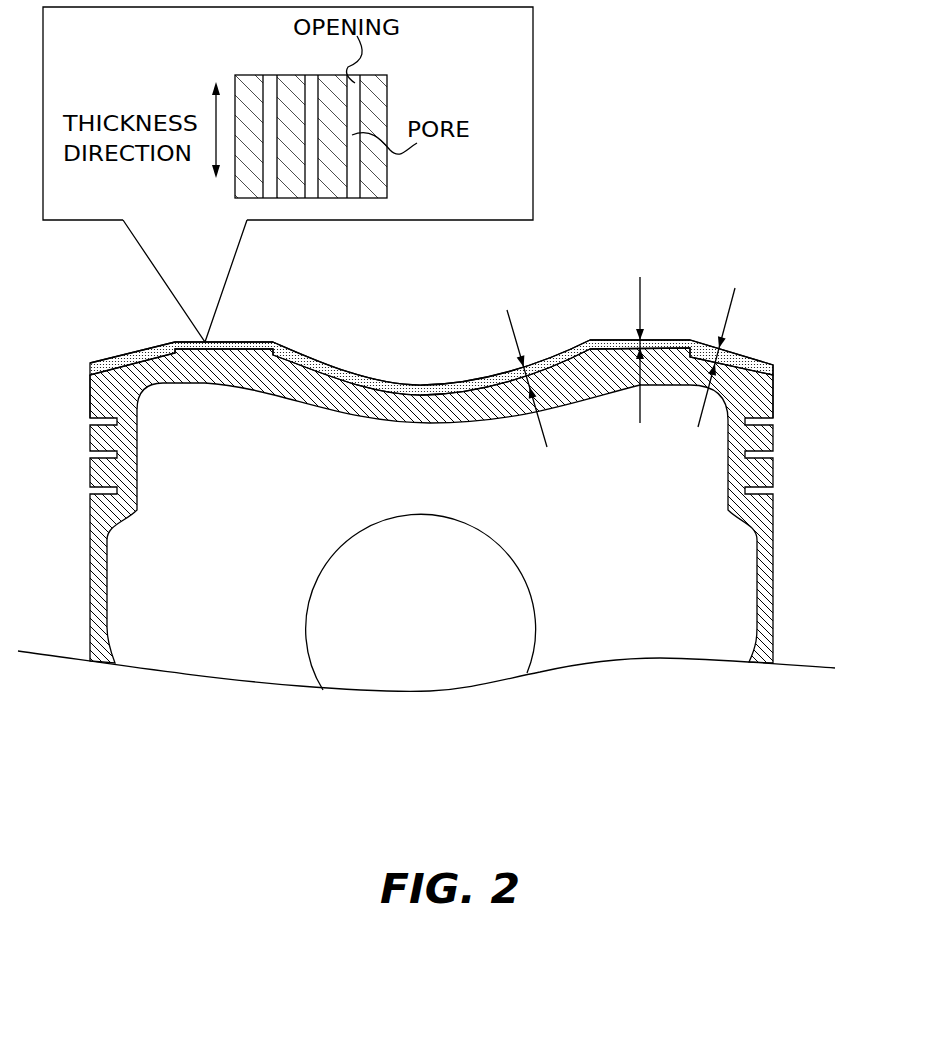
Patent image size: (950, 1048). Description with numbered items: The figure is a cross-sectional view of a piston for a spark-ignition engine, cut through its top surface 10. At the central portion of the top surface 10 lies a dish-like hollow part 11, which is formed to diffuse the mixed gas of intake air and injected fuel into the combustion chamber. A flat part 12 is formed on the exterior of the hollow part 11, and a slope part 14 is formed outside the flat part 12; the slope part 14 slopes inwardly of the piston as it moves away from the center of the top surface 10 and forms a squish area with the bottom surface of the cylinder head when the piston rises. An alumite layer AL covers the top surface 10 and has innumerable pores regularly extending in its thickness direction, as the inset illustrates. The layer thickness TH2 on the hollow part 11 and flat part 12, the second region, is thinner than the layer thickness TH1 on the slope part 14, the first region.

The top surface 10 is at (314, 354).
The hollow part 11 is at (383, 380).
The flat part 12 is at (225, 338).
The slope part 14 is at (140, 350).
The alumite layer AL is at (157, 346).
The layer thickness TH1 is at (737, 352).
The layer thickness TH2 is at (522, 364).